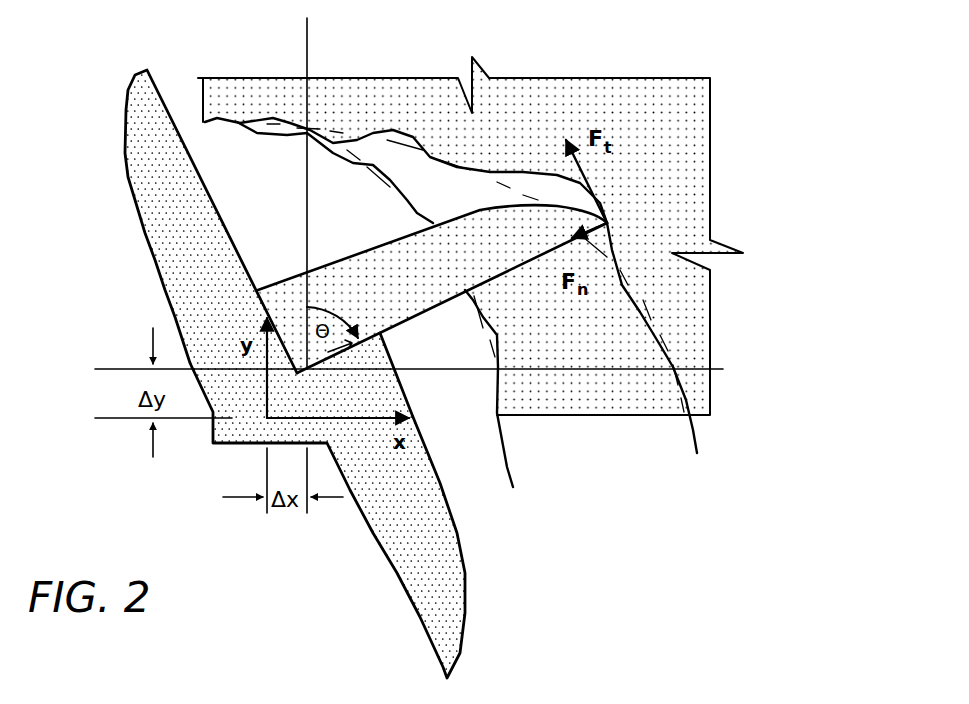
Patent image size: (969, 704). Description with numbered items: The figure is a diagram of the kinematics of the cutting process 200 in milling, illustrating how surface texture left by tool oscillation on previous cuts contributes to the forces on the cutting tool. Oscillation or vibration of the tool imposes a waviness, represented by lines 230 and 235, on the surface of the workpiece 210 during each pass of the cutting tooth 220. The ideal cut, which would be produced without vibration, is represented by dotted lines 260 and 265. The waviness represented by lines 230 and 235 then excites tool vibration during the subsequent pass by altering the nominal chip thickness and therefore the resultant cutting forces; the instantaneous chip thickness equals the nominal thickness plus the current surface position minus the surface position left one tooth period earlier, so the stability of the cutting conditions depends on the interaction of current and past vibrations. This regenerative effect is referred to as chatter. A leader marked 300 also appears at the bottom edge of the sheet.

The cutting process 200 is at (556, 46).
The workpiece 210 is at (673, 153).
The cutting tooth 220 is at (445, 620).
The line representing surface waviness 230 is at (512, 477).
The line representing surface waviness 235 is at (697, 440).
The dotted line representing ideal cut 260 is at (483, 326).
The dotted line representing ideal cut 265 is at (510, 188).
The next figure reference 300 is at (577, 696).